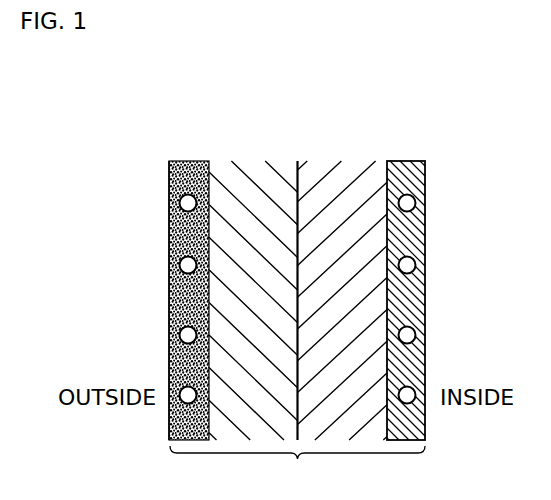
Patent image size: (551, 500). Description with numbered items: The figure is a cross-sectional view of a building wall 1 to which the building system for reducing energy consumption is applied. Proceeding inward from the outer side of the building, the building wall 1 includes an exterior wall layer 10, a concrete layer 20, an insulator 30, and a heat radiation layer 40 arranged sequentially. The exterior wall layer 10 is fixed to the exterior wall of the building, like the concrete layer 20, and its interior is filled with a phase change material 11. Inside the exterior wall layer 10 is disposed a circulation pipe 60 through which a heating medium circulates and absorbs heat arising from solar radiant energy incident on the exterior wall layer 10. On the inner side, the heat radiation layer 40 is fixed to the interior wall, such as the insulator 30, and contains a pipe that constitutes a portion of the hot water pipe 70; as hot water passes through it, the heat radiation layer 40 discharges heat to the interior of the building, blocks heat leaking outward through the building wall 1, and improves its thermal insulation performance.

The building wall 1 is at (297, 468).
The exterior wall layer 10 is at (183, 165).
The phase change material 11 is at (170, 232).
The concrete layer 20 is at (248, 172).
The insulator 30 is at (337, 172).
The heat radiation layer 40 is at (403, 172).
The circulation pipe 60 is at (170, 331).
The hot water pipe 70 is at (425, 331).